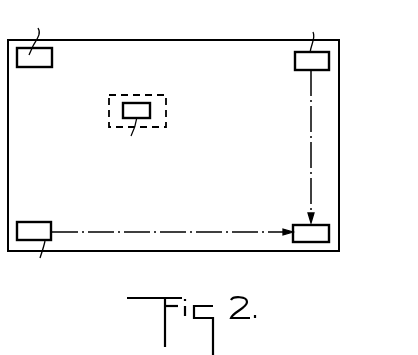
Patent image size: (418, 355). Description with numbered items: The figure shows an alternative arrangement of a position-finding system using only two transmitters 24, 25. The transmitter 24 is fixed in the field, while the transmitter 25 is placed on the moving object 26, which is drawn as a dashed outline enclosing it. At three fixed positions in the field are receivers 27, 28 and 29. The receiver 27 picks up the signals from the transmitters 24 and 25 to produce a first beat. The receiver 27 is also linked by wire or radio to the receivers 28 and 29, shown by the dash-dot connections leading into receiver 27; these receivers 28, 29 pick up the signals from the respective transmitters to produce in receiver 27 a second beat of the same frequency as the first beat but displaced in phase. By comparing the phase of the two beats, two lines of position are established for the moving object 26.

The transmitter 24 is at (44, 60).
The transmitter 25 is at (142, 105).
The moving object 26 is at (113, 94).
The receiver 27 is at (300, 225).
The receiver 28 is at (40, 224).
The receiver 29 is at (300, 69).